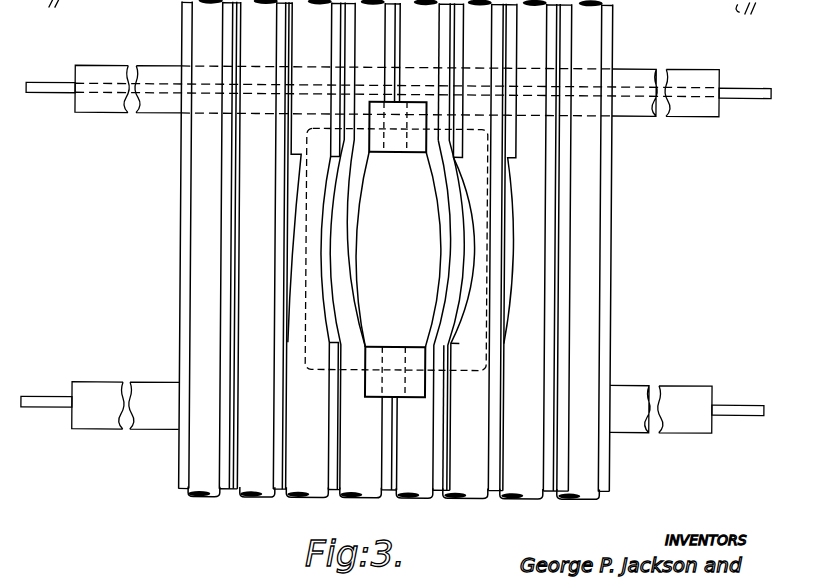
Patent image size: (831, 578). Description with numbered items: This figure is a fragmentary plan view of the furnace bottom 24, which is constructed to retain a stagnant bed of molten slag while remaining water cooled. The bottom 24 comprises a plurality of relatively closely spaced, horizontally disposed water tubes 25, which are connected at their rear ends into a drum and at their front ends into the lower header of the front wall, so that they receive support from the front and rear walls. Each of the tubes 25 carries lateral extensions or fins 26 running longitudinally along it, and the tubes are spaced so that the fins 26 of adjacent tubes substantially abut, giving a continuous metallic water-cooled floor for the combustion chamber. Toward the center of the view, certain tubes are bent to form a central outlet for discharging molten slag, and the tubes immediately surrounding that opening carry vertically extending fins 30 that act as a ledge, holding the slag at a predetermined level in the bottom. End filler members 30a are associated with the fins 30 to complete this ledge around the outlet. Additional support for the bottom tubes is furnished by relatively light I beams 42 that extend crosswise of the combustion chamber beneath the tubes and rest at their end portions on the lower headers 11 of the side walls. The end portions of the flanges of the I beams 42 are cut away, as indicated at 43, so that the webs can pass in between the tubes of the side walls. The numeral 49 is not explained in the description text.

The lower headers of the side walls 11 is at (402, 7).
The furnace bottom 24 is at (622, 247).
The water tubes 25 is at (247, 291).
The fins 26 is at (222, 216).
The vertically extending fins 30 is at (398, 247).
The end filler members 30a is at (397, 152).
The I beams 42 is at (620, 115).
The cut-away flange end portions 43 is at (82, 113).
The interior chamber 49 is at (440, 205).